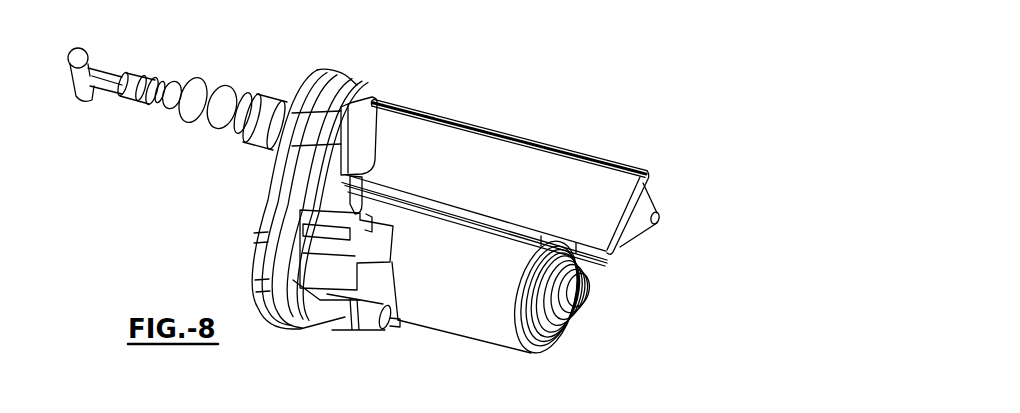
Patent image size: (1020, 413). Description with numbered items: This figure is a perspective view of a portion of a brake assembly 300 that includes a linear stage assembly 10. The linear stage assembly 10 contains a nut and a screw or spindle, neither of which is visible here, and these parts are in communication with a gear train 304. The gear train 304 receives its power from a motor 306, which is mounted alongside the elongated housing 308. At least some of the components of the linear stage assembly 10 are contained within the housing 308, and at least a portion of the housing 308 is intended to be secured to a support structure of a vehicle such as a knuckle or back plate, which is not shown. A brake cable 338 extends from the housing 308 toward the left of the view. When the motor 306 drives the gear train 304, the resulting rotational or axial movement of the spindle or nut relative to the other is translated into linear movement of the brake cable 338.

The brake assembly 300 is at (586, 69).
The linear stage assembly 10 is at (460, 144).
The gear train 304 is at (385, 174).
The motor 306 is at (457, 317).
The housing 308 is at (571, 152).
The brake cable 338 is at (167, 113).